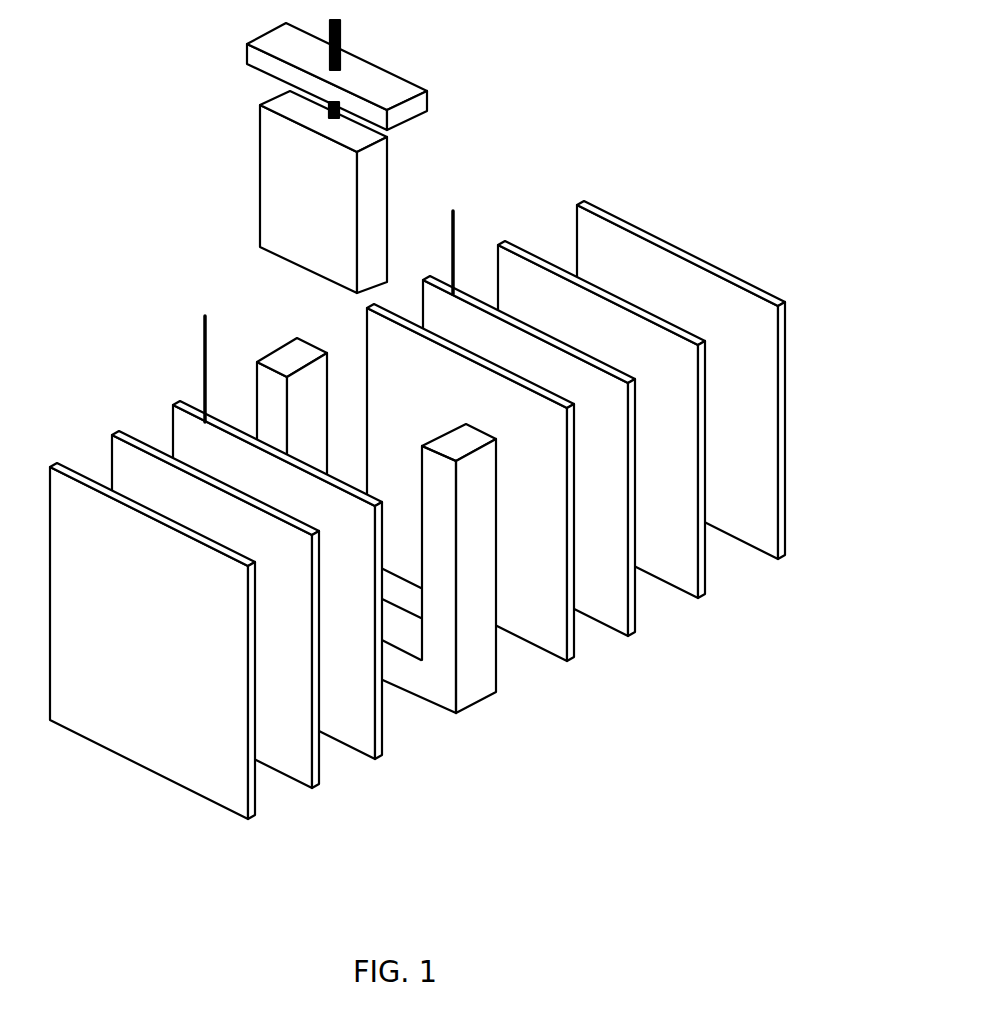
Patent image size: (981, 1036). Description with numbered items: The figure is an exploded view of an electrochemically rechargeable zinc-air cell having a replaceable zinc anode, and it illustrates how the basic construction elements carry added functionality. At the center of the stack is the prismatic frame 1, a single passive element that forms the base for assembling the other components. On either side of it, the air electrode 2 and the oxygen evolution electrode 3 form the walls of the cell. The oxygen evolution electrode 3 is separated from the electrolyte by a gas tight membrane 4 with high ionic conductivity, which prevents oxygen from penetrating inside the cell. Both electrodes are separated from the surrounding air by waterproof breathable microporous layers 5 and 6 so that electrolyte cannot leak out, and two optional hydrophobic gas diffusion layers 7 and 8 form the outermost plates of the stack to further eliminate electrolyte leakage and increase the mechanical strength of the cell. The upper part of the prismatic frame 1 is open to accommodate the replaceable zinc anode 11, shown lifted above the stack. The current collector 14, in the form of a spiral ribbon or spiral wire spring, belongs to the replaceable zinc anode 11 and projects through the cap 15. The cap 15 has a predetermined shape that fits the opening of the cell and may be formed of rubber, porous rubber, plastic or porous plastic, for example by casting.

The prismatic frame 1 is at (477, 670).
The air electrode 2 is at (353, 722).
The oxygen evolution electrode 3 is at (611, 593).
The gas tight membrane 4 is at (546, 625).
The waterproof breathable microporous layer 5 is at (281, 740).
The waterproof breathable microporous layer 6 is at (667, 555).
The hydrophobic gas diffusion layer 7 is at (175, 742).
The hydrophobic gas diffusion layer 8 is at (739, 498).
The replaceable zinc anode 11 is at (177, 135).
The current collector 14 is at (341, 43).
The rubber cap 15 is at (384, 82).